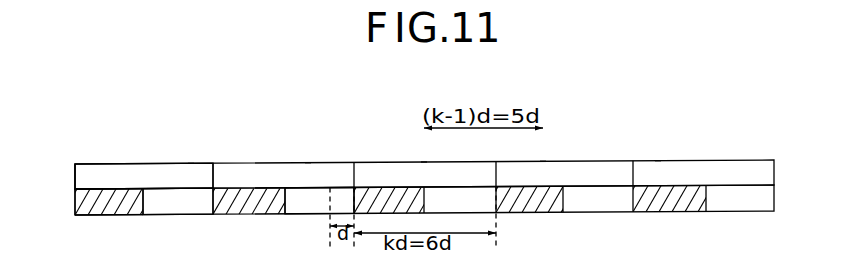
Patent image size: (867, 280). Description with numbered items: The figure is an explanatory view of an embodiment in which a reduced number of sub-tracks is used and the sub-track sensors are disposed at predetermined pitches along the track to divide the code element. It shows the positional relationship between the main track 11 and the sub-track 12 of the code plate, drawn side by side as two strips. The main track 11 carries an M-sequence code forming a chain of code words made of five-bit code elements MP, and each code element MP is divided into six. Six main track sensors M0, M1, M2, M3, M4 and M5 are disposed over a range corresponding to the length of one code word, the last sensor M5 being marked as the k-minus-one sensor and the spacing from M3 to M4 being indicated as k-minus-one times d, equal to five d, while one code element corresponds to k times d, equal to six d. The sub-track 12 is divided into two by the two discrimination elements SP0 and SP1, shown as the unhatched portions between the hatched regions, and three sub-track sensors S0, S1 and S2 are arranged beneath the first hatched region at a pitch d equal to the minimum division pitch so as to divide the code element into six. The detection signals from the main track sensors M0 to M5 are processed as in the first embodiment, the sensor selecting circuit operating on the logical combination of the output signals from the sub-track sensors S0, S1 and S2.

The main track 11 is at (405, 174).
The sub-track 12 is at (75, 206).
The code element MP is at (144, 176).
The main track sensor M0 is at (75, 164).
The main track sensor M1 is at (191, 163).
The main track sensor M2 is at (308, 163).
The main track sensor M3 is at (424, 162).
The main track sensor M4 is at (543, 161).
The main track sensor M5 is at (658, 161).
The sub-track sensor S0 is at (86, 216).
The sub-track sensor S1 is at (108, 216).
The sub-track sensor S2 is at (131, 216).
The discrimination element SP0 is at (142, 204).
The discrimination element SP1 is at (205, 204).